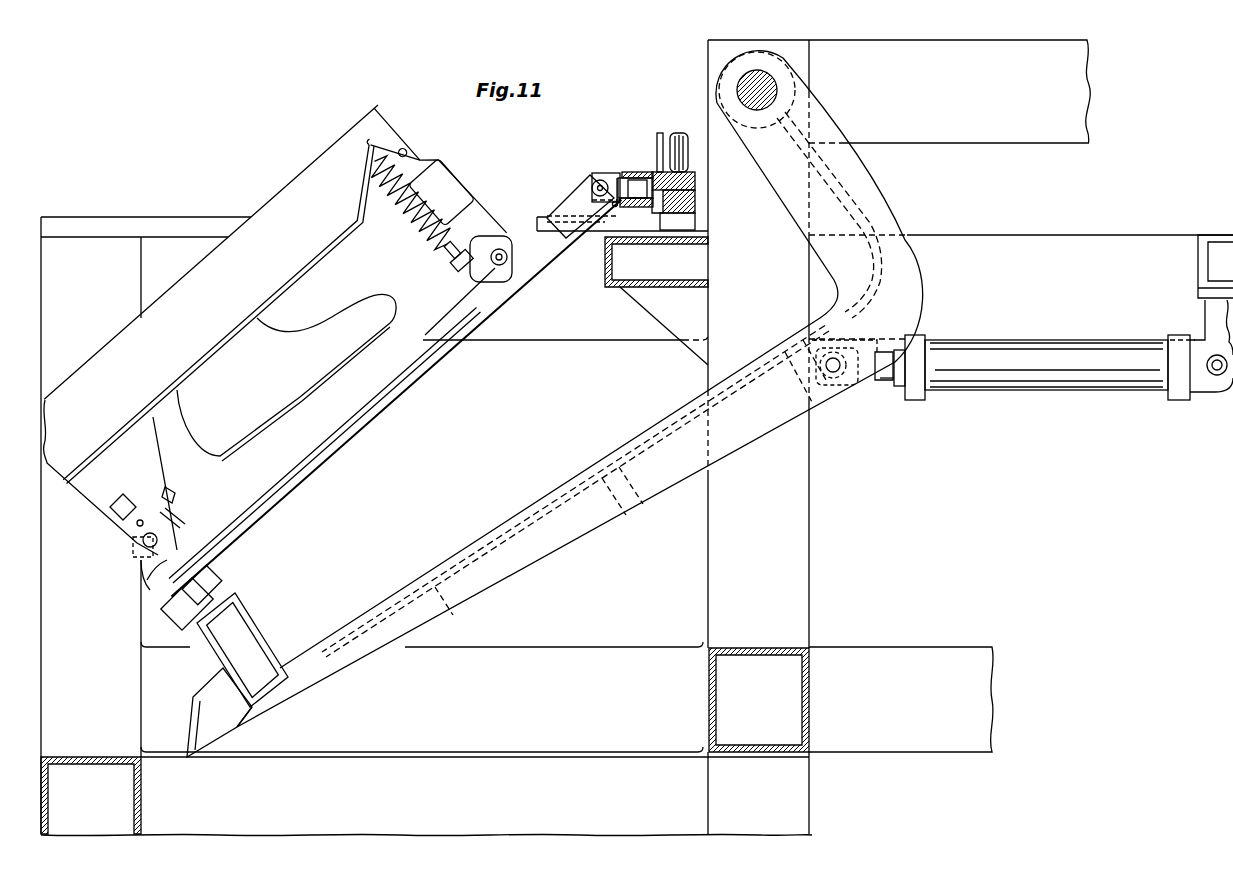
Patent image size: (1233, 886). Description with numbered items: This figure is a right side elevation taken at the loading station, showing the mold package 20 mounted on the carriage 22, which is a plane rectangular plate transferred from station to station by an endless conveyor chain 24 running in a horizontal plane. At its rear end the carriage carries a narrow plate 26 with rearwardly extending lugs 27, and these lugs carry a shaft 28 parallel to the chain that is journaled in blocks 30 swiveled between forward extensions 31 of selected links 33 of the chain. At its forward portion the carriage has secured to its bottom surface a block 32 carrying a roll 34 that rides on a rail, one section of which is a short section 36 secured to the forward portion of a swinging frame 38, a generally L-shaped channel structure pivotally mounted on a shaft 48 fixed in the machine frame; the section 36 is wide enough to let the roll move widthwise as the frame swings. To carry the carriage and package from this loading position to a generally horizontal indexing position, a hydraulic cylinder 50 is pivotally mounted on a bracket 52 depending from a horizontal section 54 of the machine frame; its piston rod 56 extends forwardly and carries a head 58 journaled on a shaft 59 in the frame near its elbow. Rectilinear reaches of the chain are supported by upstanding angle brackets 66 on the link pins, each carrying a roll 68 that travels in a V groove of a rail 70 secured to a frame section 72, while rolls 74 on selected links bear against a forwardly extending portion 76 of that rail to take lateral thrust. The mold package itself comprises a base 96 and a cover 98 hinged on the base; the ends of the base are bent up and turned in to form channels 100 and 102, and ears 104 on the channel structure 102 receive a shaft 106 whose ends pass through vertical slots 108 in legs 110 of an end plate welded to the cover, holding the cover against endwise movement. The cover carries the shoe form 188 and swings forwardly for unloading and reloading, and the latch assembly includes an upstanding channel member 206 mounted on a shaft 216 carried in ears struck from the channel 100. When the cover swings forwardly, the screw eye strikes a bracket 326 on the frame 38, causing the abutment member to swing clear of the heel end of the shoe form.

The mold package 20 is at (258, 188).
The carriage 22 is at (308, 478).
The endless chain 24 is at (628, 188).
The narrow plate 26 is at (556, 228).
The lugs 27 is at (590, 193).
The shaft 28 is at (596, 186).
The blocks 30 is at (622, 180).
The forward extensions 31 is at (598, 178).
The block 32 is at (212, 582).
The links 33 is at (640, 172).
The roll 34 is at (183, 615).
The short rail section 36 is at (256, 585).
The swinging frame 38 is at (580, 389).
The shaft 48 is at (778, 92).
The hydraulic cylinder 50 is at (1020, 340).
The bracket 52 is at (1205, 328).
The horizontal section 54 is at (1198, 256).
The rod 56 is at (888, 384).
The head 58 is at (868, 388).
The shaft 59 is at (838, 358).
The angle brackets 66 is at (660, 133).
The roll 68 is at (680, 133).
The rail 70 is at (698, 181).
The frame section 72 is at (708, 266).
The rolls 74 is at (698, 196).
The forwardly extending portion 76 is at (698, 209).
The base 96 is at (407, 380).
The cover 98 is at (336, 144).
The channel 100 is at (490, 264).
The channel 102 is at (178, 530).
The ears 104 is at (142, 586).
The shaft 106 is at (138, 555).
The vertical slots 108 is at (143, 522).
The legs 110 is at (112, 532).
The shoe form 188 is at (285, 332).
The channel member 206 is at (450, 173).
The shaft 216 is at (492, 274).
The bracket 326 is at (196, 714).